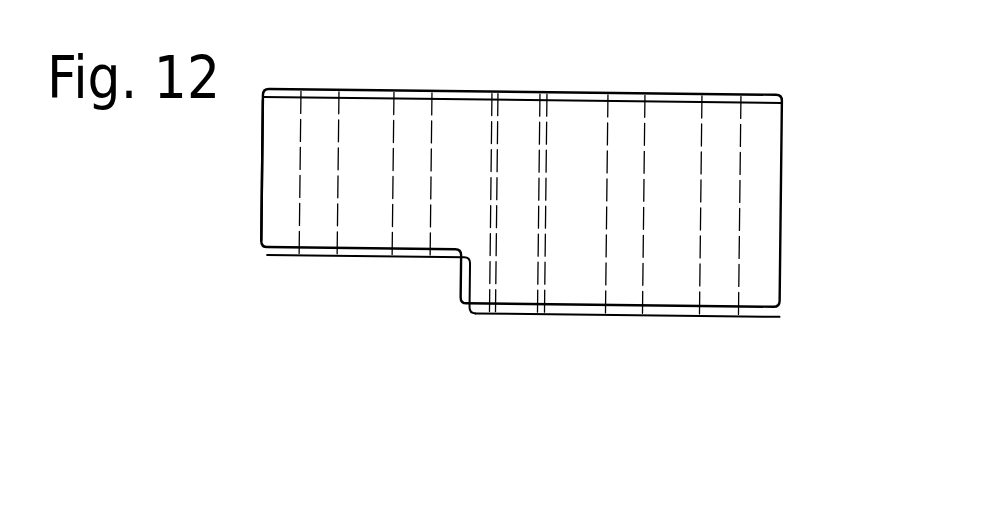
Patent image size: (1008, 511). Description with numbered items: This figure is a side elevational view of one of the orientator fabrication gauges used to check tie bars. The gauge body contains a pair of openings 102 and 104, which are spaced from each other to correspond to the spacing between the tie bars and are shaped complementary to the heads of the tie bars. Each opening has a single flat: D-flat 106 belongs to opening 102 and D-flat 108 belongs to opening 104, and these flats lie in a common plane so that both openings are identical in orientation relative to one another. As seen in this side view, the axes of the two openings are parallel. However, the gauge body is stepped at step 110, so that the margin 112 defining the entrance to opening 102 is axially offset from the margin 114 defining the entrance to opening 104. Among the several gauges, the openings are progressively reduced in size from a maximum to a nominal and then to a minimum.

The opening 102 is at (724, 161).
The opening 104 is at (302, 187).
The D-flat 106 is at (672, 117).
The D-flat 108 is at (366, 108).
The step 110 is at (460, 282).
The margin 112 is at (725, 320).
The margin 114 is at (313, 258).